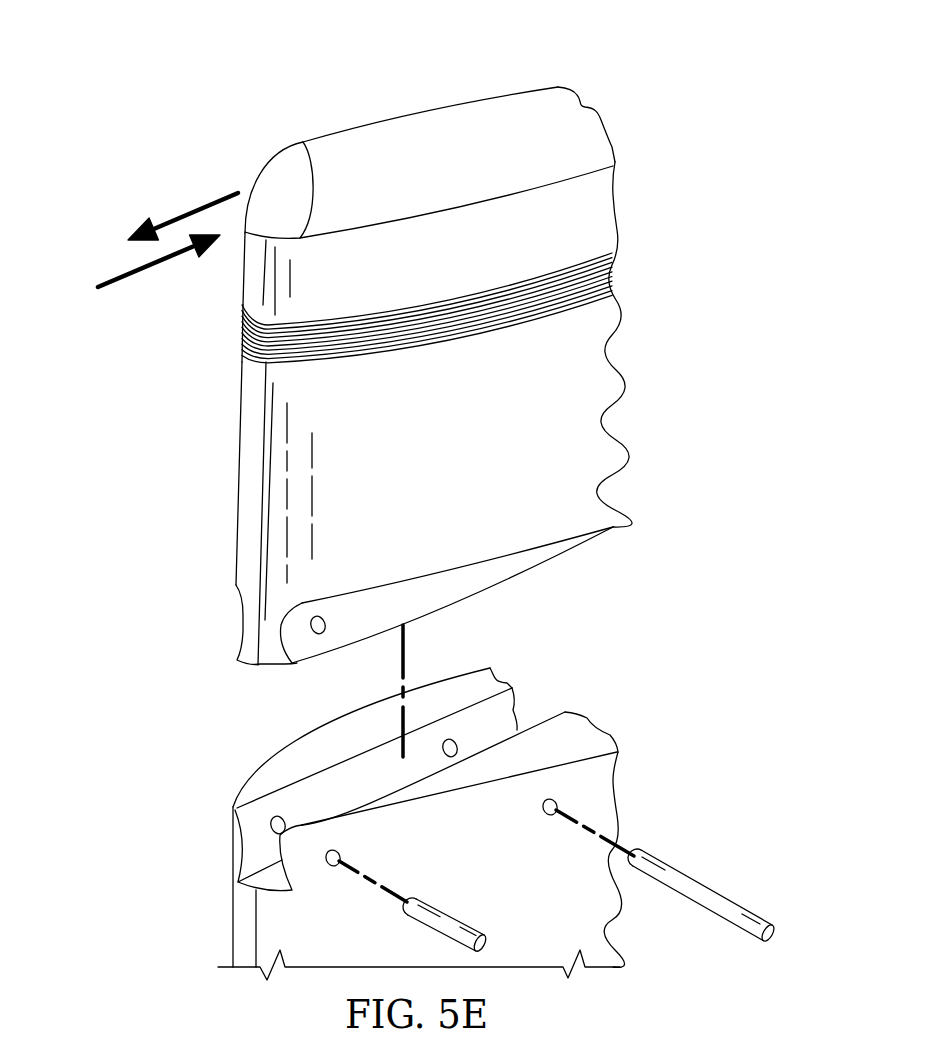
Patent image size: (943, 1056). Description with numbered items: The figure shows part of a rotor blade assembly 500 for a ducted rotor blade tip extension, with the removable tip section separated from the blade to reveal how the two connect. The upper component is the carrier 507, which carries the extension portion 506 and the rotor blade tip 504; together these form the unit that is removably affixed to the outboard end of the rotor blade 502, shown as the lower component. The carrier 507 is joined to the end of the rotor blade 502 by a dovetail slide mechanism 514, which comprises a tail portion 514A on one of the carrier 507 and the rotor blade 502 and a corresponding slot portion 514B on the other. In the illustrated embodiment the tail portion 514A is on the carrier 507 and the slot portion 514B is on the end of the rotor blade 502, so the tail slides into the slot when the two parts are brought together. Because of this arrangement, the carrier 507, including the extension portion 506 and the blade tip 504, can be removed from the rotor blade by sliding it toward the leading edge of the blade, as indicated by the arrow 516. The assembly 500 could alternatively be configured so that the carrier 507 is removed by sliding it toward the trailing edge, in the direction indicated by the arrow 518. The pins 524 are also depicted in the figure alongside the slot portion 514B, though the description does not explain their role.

The rotor blade assembly 500 is at (262, 70).
The rotor blade 502 is at (230, 937).
The rotor blade tip 504 is at (243, 283).
The extension portion 506 is at (242, 325).
The carrier 507 is at (238, 470).
The dovetail slide mechanism 514 is at (181, 601).
The tail portion 514A is at (240, 633).
The slot portion 514B is at (257, 843).
The arrow 516 is at (188, 213).
The arrow 518 is at (112, 277).
The pins 524 is at (455, 917).